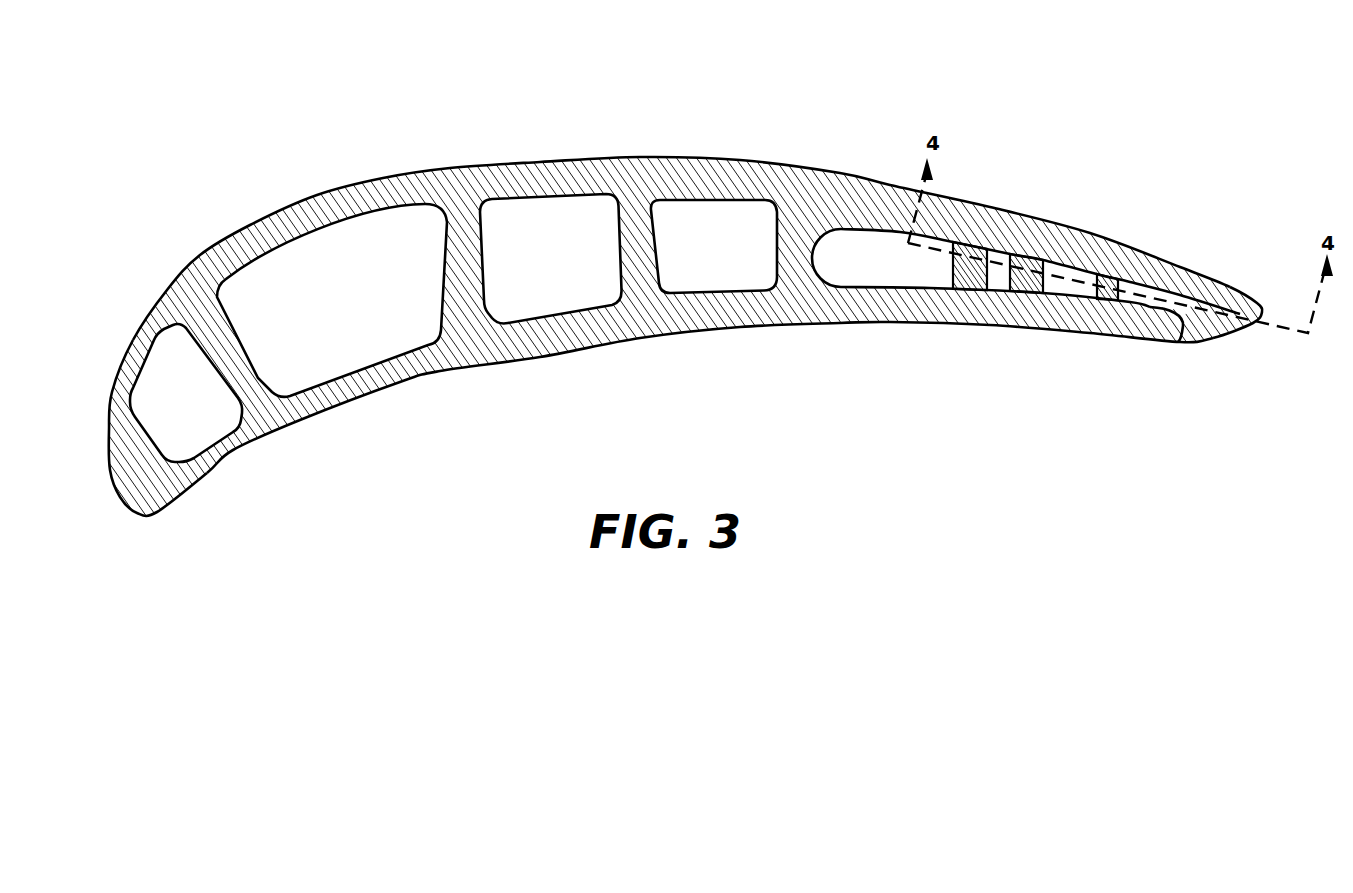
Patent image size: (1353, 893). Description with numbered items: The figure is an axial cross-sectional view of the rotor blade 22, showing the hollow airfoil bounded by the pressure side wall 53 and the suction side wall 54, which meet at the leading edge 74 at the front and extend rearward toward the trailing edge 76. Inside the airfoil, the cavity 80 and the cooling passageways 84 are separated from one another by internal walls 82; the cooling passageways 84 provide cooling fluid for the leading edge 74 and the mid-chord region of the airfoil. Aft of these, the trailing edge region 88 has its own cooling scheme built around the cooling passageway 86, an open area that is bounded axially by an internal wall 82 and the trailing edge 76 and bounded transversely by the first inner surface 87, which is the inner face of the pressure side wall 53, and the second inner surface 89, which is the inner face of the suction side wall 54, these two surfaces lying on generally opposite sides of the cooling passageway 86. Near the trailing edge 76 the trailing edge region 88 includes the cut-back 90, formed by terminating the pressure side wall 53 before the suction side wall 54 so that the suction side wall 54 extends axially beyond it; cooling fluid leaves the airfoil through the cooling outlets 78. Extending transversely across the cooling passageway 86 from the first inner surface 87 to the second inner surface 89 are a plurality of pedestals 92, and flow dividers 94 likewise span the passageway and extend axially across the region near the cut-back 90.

The rotor blade 22 is at (358, 120).
The pressure side wall 53 is at (576, 362).
The suction side wall 54 is at (488, 149).
The leading edge 74 is at (140, 514).
The trailing edge 76 is at (1268, 298).
The cooling outlets 78 is at (1244, 349).
The cavity 80 is at (358, 335).
The internal walls 82 is at (788, 275).
The cooling passageways 84 is at (290, 273).
The cooling passageway 86 is at (857, 253).
The first inner surface 87 is at (903, 282).
The trailing edge region 88 is at (953, 193).
The second inner surface 89 is at (880, 237).
The cut-back 90 is at (1206, 355).
The pedestals 92 is at (961, 292).
The flow dividers 94 is at (1151, 310).